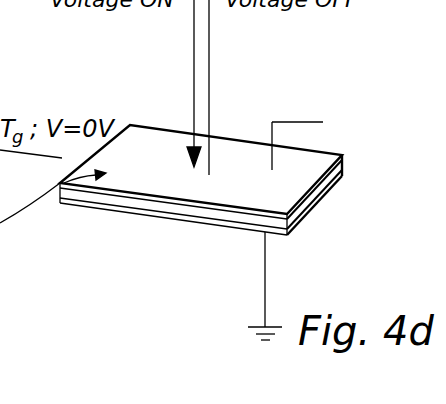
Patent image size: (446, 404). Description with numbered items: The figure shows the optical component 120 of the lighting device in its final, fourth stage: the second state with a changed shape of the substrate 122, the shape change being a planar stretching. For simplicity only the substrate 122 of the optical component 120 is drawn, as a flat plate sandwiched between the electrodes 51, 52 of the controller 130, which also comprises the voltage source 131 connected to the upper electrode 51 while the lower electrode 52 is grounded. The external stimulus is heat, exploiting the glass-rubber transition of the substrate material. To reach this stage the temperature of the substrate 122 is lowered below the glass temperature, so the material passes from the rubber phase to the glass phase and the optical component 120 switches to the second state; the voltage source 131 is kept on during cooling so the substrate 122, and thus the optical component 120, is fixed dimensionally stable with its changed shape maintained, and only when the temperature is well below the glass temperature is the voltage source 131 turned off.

The electrode 51 is at (137, 148).
The electrode 52 is at (188, 223).
The optical component 120 is at (324, 213).
The substrate 122 is at (140, 207).
The controller 130 is at (358, 109).
The voltage source 131 is at (294, 122).